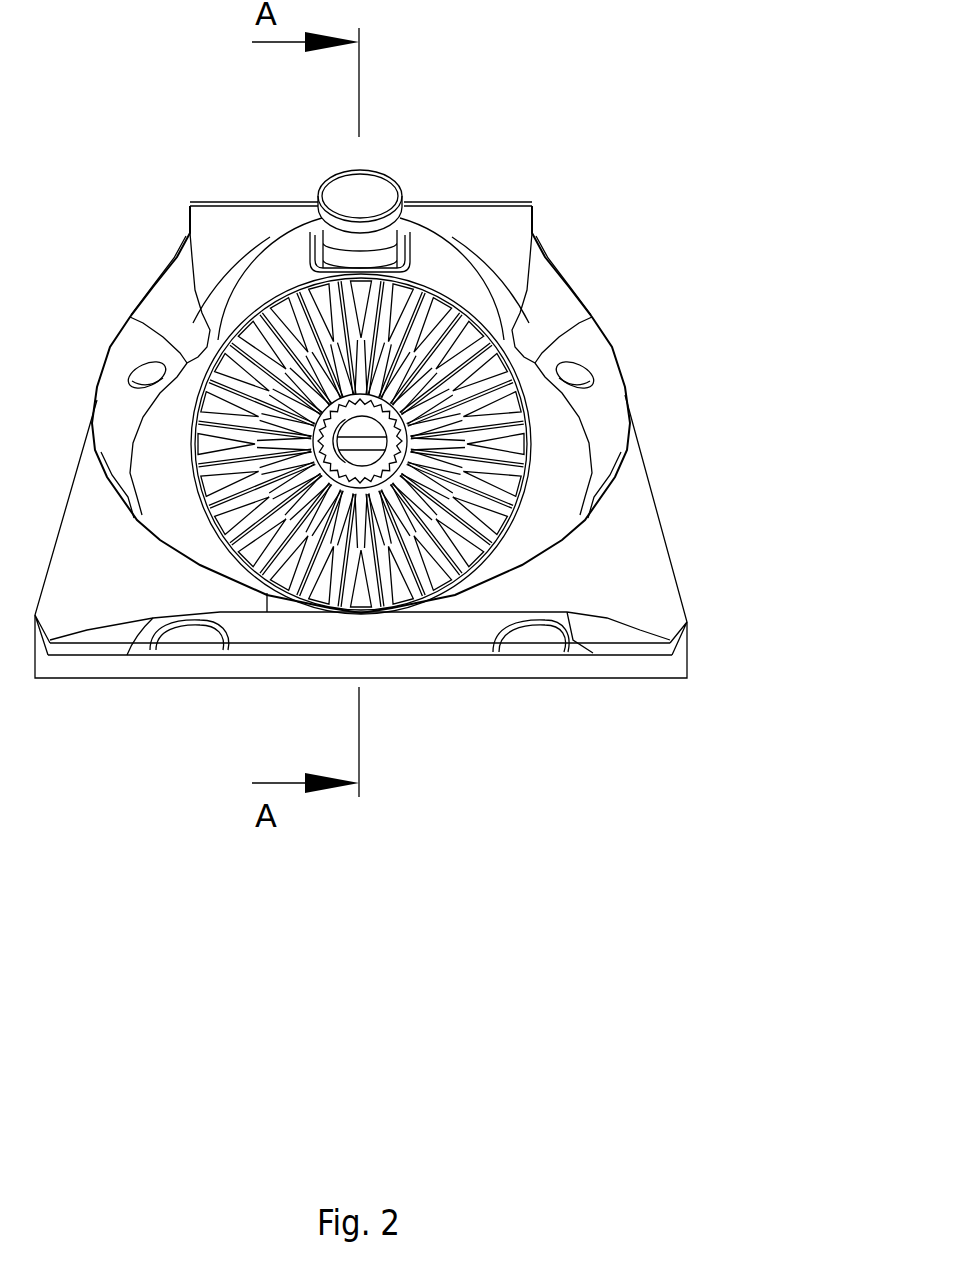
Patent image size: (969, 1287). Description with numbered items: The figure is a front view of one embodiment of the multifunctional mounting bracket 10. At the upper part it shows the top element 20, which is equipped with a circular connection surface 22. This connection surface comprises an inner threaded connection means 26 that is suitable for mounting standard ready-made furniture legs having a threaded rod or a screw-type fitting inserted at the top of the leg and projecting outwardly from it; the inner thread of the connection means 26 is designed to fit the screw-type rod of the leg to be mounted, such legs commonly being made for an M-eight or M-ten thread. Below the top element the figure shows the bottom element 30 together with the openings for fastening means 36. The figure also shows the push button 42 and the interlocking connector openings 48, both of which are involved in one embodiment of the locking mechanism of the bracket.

The multifunctional mounting bracket 10 is at (532, 65).
The top element 20 is at (374, 407).
The circular connection surface 22 is at (408, 514).
The connection means 26 is at (363, 450).
The bottom element 30 is at (388, 580).
The openings for fastening means 36 is at (183, 633).
The push button 42 is at (377, 170).
The interlocking connector openings 48 is at (145, 380).